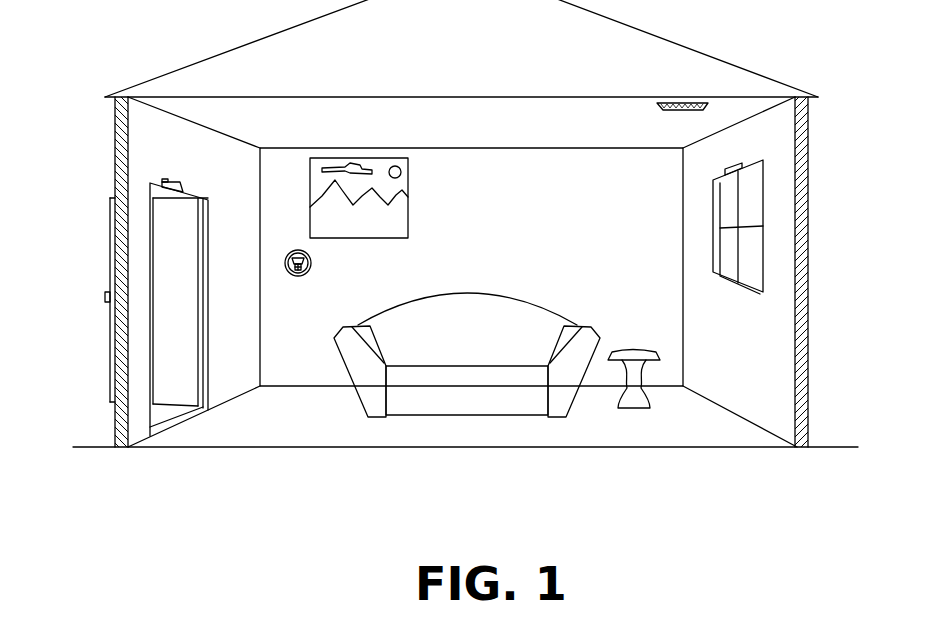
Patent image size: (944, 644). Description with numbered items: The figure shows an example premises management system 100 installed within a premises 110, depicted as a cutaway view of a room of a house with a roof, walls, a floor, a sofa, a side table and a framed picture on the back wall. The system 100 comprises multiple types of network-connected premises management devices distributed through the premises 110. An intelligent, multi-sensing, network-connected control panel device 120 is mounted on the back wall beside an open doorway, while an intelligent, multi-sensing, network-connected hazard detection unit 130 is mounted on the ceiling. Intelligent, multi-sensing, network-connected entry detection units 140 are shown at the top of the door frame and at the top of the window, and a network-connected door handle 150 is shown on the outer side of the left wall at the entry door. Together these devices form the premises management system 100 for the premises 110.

The premises management system 100 is at (487, 521).
The premises 110 is at (480, 237).
The control panel device 120 is at (285, 272).
The hazard detection unit 130 is at (668, 111).
The entry detection unit 140 is at (173, 183).
The door handle 150 is at (105, 298).